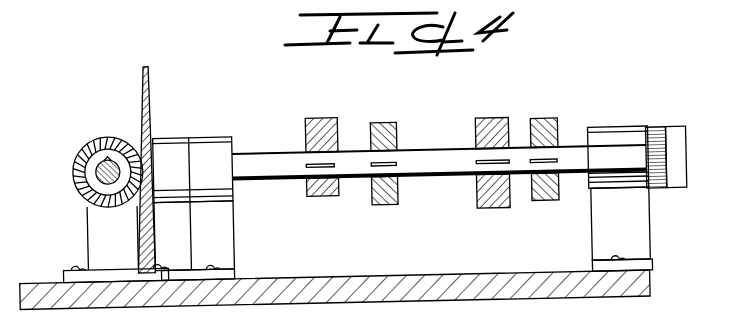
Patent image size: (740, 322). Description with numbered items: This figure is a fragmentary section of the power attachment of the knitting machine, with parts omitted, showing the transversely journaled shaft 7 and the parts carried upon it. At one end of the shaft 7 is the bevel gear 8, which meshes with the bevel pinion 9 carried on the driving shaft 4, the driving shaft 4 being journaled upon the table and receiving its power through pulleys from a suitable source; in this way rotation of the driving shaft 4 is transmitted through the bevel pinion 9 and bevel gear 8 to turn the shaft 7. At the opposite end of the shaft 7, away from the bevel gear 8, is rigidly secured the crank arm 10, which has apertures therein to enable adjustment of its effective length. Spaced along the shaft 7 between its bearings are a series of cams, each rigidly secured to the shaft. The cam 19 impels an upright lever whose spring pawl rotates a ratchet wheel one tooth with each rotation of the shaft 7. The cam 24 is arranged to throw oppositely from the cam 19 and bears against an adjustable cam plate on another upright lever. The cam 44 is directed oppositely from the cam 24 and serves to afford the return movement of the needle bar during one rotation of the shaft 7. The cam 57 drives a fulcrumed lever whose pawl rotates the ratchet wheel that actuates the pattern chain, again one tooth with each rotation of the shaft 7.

The driving shaft 4 is at (98, 172).
The bevel pinion 9 is at (93, 131).
The bevel gear 8 is at (142, 78).
The shaft 7 is at (426, 168).
The cam 19 is at (319, 131).
The cam 24 is at (387, 128).
The cam 44 is at (497, 130).
The cam 57 is at (540, 127).
The crank arm 10 is at (656, 159).